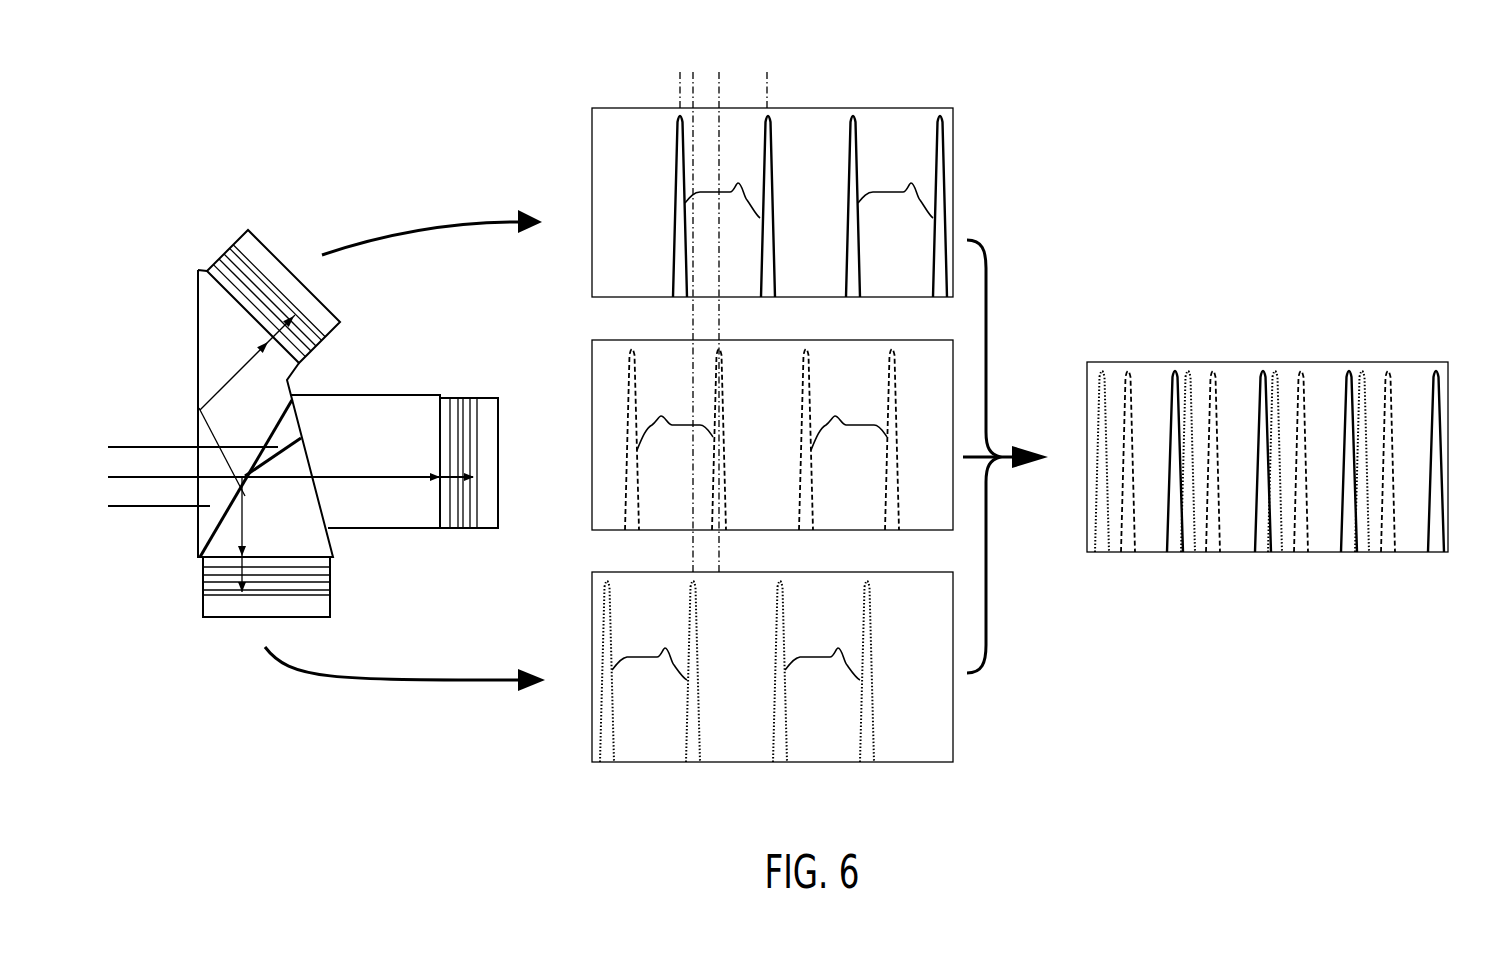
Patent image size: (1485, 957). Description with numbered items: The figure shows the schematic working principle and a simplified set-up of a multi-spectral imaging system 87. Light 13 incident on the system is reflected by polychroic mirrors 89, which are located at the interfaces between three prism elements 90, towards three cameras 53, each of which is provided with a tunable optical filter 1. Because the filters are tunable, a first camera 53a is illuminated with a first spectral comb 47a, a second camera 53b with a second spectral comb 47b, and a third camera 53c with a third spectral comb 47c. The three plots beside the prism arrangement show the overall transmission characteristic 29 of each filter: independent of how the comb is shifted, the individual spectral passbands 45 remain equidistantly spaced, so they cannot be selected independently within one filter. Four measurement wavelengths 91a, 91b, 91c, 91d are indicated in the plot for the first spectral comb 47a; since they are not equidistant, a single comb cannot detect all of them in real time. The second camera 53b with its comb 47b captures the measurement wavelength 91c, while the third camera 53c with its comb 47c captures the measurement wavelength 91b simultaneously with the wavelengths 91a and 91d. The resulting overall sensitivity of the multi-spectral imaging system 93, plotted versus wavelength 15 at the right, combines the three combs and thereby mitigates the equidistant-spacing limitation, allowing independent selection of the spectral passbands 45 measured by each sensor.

The optical filter 1 is at (313, 353).
The light 13 is at (133, 480).
The wavelength 15 is at (1234, 555).
The overall transmission characteristic 29 is at (954, 116).
The spectral passbands 45 is at (772, 419).
The first spectral comb 47a is at (868, 135).
The second spectral comb 47b is at (906, 379).
The third spectral comb 47c is at (884, 737).
The cameras 53 is at (341, 431).
The first camera 53a is at (281, 248).
The second camera 53b is at (485, 403).
The third camera 53c is at (218, 607).
The multi-spectral imaging system 87 is at (290, 140).
The polychroic mirrors 89 is at (282, 407).
The prism elements 90 is at (203, 384).
The first measurement wavelength 91a is at (678, 84).
The second measurement wavelength 91b is at (694, 84).
The third measurement wavelength 91c is at (720, 84).
The fourth measurement wavelength 91d is at (768, 84).
The overall sensitivity of the multi-spectral imaging system 93 is at (1300, 365).